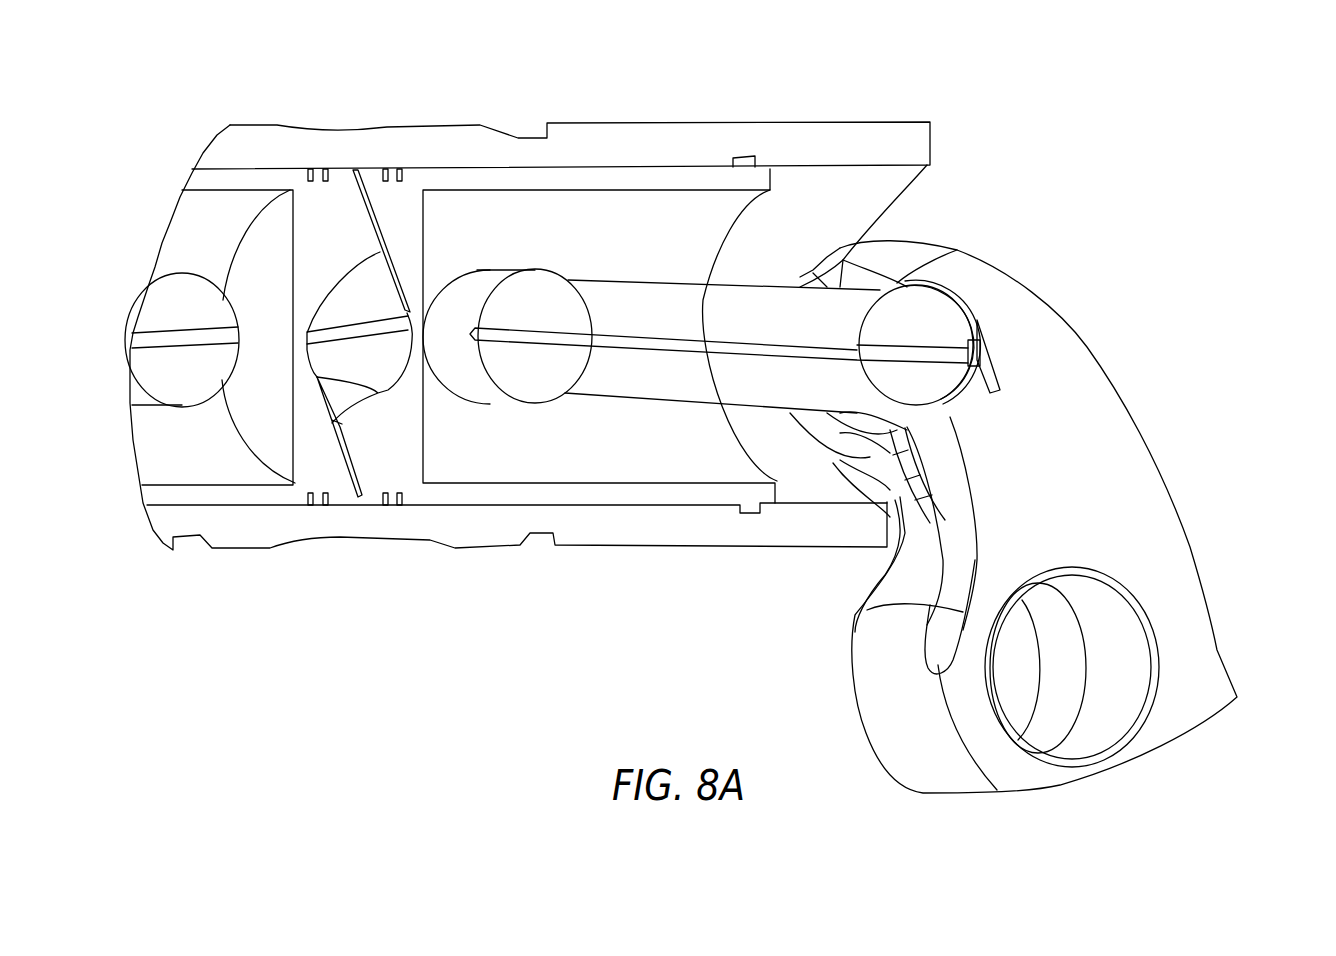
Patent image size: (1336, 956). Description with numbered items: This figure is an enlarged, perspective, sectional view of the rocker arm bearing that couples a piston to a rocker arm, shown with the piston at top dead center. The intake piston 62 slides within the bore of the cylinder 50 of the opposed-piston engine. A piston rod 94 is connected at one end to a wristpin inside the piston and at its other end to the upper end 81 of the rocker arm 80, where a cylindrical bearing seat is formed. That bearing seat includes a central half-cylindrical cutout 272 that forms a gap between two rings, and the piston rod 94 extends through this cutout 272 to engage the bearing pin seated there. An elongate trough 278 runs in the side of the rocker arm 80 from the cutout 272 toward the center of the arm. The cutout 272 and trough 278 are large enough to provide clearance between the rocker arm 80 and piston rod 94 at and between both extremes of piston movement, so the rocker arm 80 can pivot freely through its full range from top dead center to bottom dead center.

The cylinder 50 is at (662, 122).
The intake piston 62 is at (437, 178).
The piston rod 94 is at (767, 287).
The half-cylindrical cutout 272 is at (843, 267).
The rocker arm end 81 is at (973, 232).
The elongate trough 278 is at (883, 440).
The rocker arm 80 is at (1195, 508).